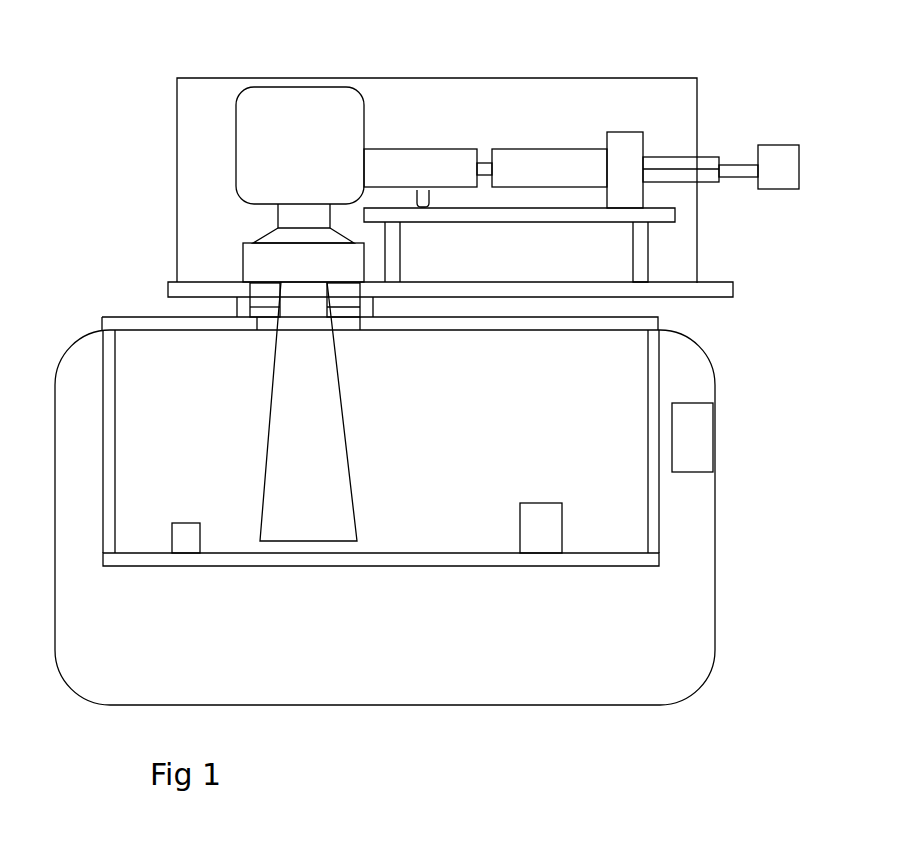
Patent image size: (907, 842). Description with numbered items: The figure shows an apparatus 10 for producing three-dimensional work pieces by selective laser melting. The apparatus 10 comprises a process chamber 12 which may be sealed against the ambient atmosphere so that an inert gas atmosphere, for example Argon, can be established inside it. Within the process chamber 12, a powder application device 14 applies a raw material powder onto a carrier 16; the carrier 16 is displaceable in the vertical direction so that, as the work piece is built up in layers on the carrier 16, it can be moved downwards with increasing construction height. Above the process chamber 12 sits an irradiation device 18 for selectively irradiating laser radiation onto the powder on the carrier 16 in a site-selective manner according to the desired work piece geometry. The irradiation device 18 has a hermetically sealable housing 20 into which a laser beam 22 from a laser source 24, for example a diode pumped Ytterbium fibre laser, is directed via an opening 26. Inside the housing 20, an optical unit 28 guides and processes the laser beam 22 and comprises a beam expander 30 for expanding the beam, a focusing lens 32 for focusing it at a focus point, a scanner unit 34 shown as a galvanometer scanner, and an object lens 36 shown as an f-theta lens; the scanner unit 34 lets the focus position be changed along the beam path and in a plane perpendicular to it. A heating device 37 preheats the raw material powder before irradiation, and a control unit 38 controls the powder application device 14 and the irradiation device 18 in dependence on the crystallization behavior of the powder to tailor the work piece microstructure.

The apparatus 10 is at (797, 248).
The process chamber 12 is at (604, 540).
The powder application device 14 is at (540, 517).
The carrier 16 is at (397, 560).
The irradiation device 18 is at (768, 115).
The housing 20 is at (658, 80).
The laser beam 22 is at (677, 183).
The laser source 24 is at (787, 158).
The opening 26 is at (697, 157).
The optical unit 28 is at (518, 127).
The beam expander 30 is at (555, 163).
The focusing lens 32 is at (427, 160).
The scanner unit 34 is at (322, 98).
The object lens 36 is at (253, 259).
The heating device 37 is at (181, 537).
The control unit 38 is at (720, 427).